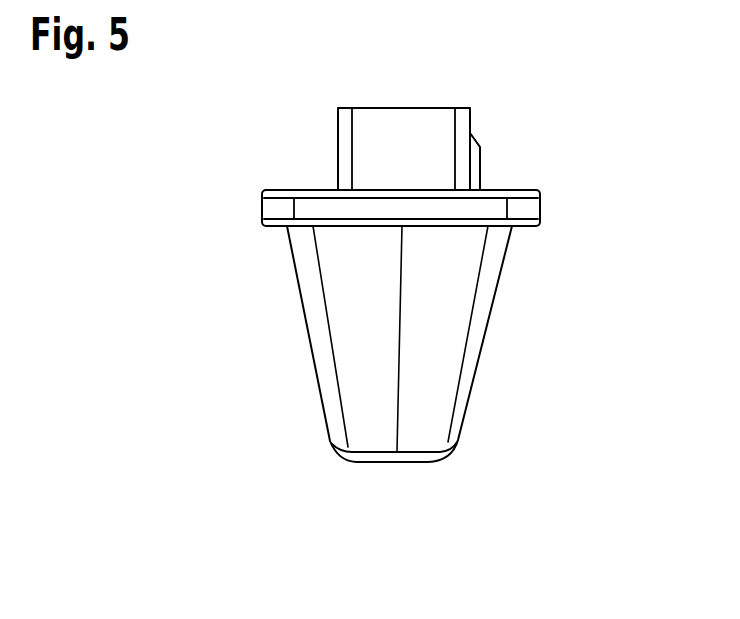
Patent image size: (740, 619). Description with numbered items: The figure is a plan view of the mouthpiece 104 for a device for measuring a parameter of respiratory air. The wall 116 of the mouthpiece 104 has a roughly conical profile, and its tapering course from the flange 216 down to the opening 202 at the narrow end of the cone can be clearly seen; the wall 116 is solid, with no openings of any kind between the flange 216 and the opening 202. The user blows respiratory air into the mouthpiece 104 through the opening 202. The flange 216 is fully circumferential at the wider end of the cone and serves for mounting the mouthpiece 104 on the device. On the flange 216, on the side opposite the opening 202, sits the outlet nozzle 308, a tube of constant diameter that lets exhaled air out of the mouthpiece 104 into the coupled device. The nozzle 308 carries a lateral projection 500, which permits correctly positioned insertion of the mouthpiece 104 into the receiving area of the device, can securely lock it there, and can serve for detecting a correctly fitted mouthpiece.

The mouthpiece 104 is at (231, 154).
The outlet nozzle 308 is at (481, 124).
The projection 500 is at (480, 170).
The flange 216 is at (542, 213).
The wall 116 is at (495, 325).
The opening 202 is at (419, 464).